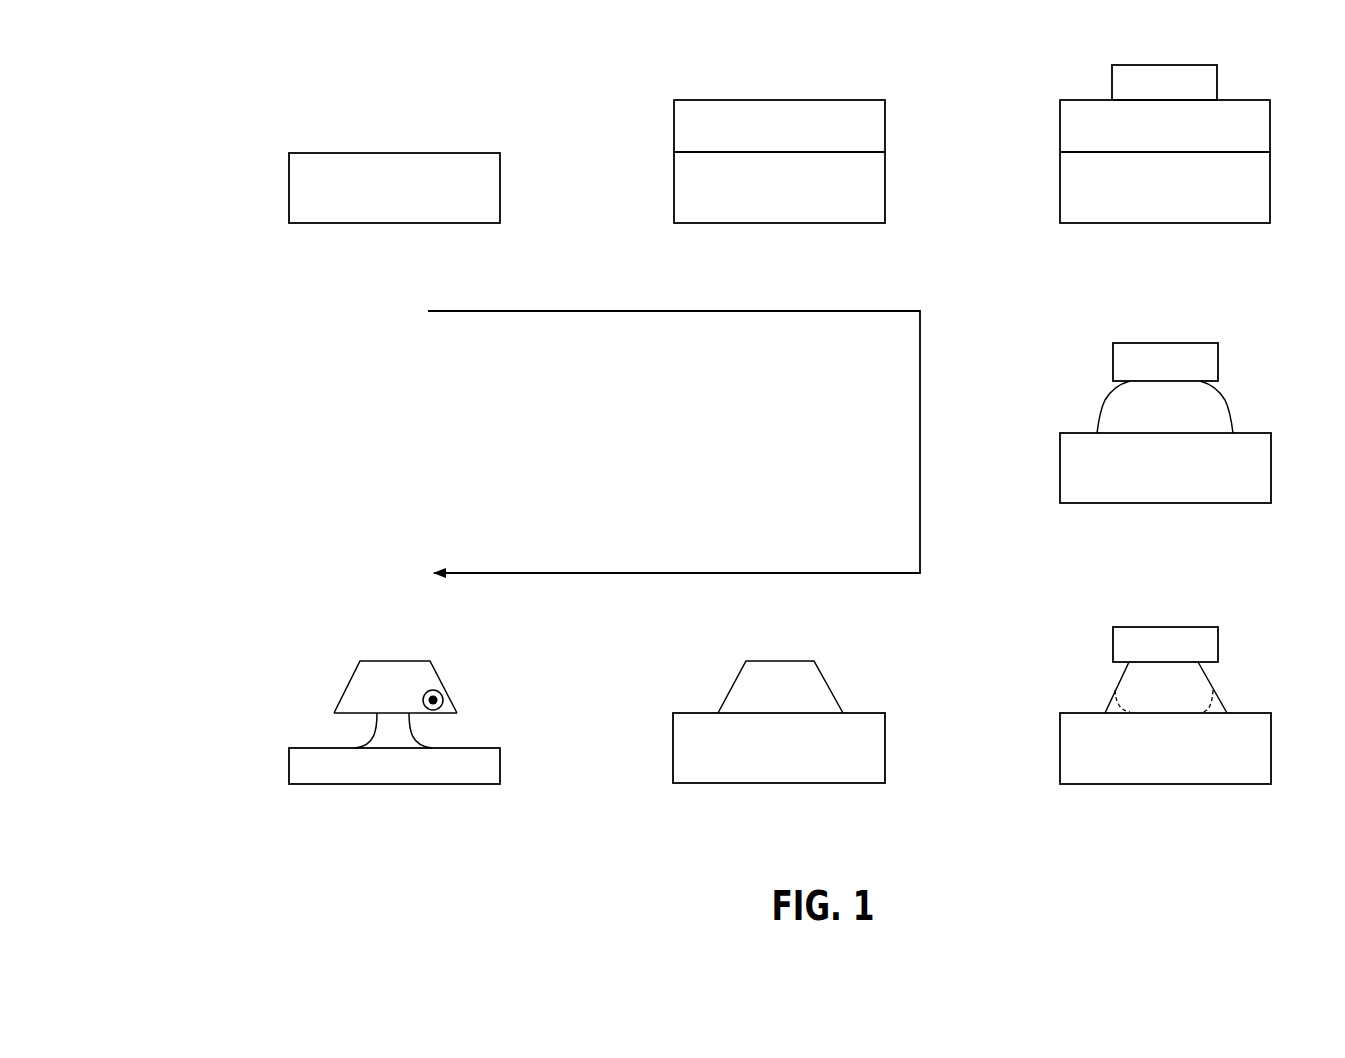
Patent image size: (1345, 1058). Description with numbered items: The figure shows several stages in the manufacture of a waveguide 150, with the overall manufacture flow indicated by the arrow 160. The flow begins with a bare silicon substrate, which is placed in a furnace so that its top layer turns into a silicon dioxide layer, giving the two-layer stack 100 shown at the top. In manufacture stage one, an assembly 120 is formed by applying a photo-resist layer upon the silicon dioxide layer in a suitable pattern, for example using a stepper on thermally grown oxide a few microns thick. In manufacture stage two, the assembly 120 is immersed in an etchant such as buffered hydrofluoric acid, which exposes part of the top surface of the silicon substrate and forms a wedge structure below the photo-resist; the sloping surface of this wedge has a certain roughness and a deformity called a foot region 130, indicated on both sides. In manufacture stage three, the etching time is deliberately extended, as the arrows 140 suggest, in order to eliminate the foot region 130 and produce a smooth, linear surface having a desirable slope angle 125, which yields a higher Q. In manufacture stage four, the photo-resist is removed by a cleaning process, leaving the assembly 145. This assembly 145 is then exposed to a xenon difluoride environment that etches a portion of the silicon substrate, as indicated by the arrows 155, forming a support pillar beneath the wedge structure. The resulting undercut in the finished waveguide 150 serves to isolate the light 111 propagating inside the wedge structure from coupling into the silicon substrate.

The semiconductor structure with oxide layer 100 is at (743, 135).
The light 111 is at (433, 689).
The assembly 120 is at (1121, 146).
The slope angle 125 is at (1130, 706).
The foot region 130 is at (1165, 427).
The anisotropic etch 140 is at (1165, 705).
The assembly 145 is at (740, 740).
The waveguide 150 is at (360, 717).
The lateral etch 155 is at (334, 732).
The arrow 160 is at (640, 572).